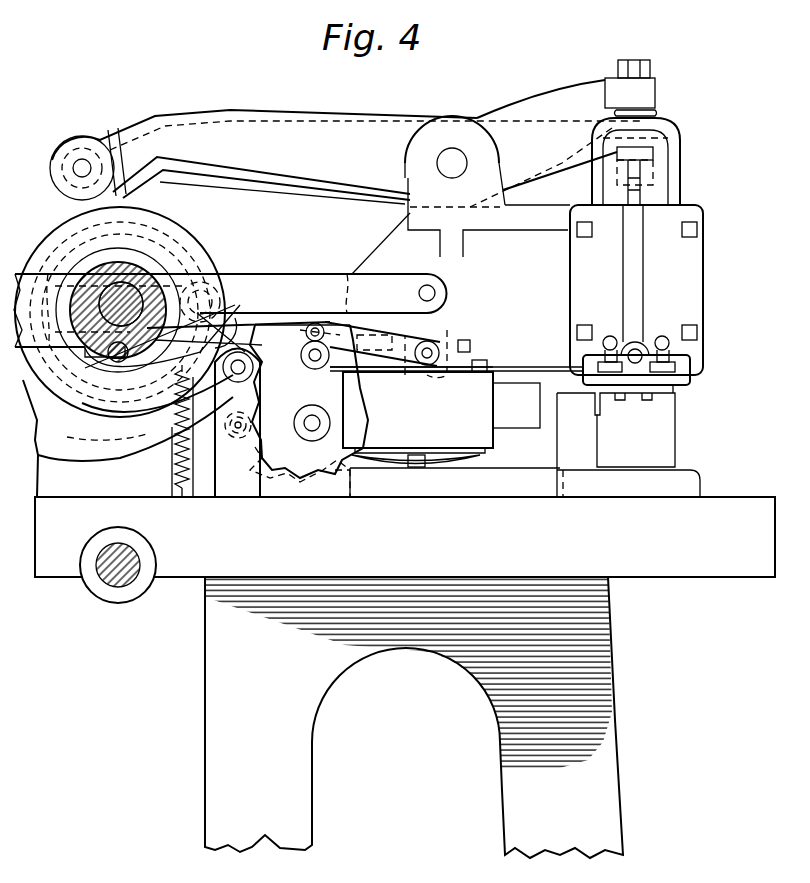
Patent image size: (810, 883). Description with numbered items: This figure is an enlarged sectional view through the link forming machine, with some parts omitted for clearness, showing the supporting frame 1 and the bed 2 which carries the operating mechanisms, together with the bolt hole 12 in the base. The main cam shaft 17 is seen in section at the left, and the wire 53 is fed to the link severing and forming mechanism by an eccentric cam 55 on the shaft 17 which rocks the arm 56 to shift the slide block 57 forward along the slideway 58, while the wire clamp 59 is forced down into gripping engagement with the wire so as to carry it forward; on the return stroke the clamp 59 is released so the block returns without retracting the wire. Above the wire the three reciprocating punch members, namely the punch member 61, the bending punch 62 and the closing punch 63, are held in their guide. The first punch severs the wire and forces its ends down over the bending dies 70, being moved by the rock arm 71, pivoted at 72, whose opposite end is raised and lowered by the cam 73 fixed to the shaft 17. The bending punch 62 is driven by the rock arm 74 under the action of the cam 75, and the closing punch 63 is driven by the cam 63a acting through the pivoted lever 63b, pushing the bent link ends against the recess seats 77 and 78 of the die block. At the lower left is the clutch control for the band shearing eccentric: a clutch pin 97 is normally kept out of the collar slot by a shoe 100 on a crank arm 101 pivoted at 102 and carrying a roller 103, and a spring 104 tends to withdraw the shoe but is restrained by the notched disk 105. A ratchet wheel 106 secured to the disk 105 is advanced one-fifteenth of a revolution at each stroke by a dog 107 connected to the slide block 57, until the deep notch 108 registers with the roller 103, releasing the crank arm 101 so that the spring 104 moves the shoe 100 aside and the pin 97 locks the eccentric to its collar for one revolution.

The supporting frame 1 is at (597, 710).
The bed 2 is at (664, 573).
The bolt hole 12 is at (120, 568).
The shaft 17 is at (90, 283).
The wire 53 is at (466, 373).
The eccentric cam 55 is at (100, 366).
The arm 56 is at (300, 282).
The slide block 57 is at (451, 434).
The slideway 58 is at (516, 405).
The wire clamp 59 is at (455, 366).
The punch member 61 is at (676, 203).
The bending punch 62 is at (656, 192).
The closing punch 63 is at (655, 185).
The cam 63a is at (195, 240).
The pivoted lever 63b is at (184, 110).
The bending dies 70 is at (646, 362).
The rock arm 71 is at (177, 168).
The pivot 72 is at (552, 92).
The cam 73 is at (188, 254).
The rock arm 74 is at (212, 170).
The cam 75 is at (225, 332).
The recess seat 77 is at (622, 389).
The recess seat 78 is at (645, 392).
The pin 97 is at (80, 352).
The shoe 100 is at (135, 362).
The crank arm 101 is at (212, 378).
The pivot 102 is at (240, 360).
The roller 103 is at (229, 434).
The spring 104 is at (176, 472).
The notched disk 105 is at (280, 462).
The ratchet wheel 106 is at (358, 410).
The dog 107 is at (327, 368).
The deep notch 108 is at (366, 426).